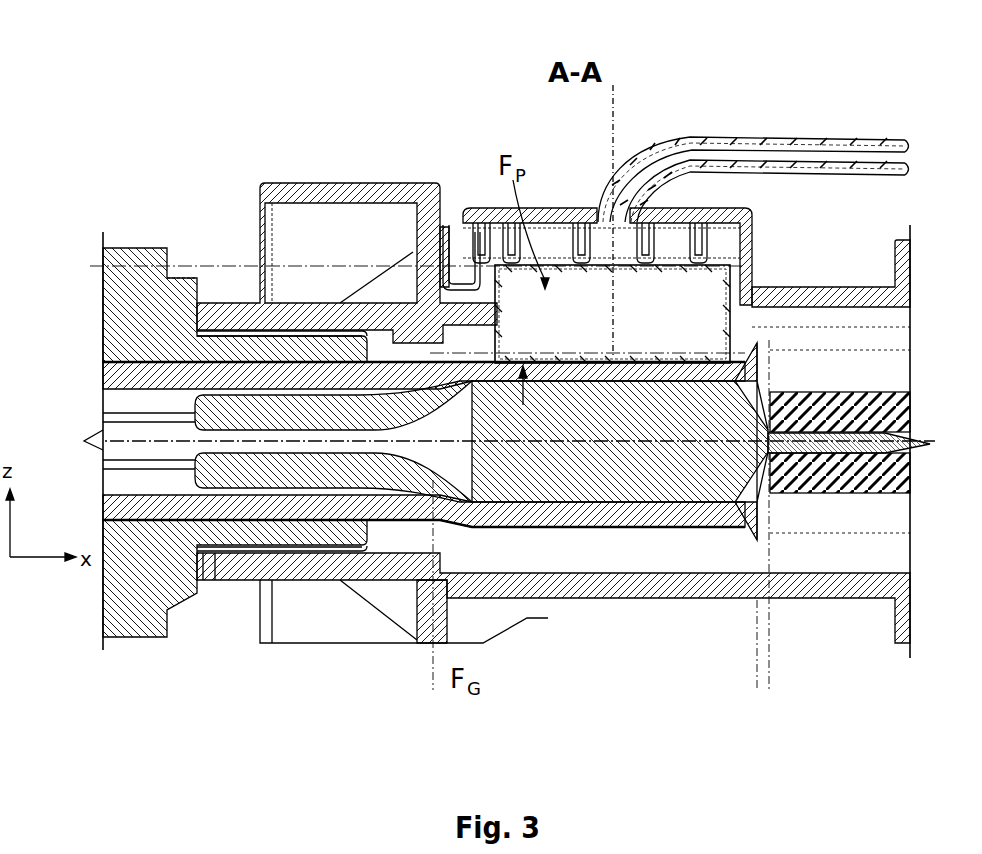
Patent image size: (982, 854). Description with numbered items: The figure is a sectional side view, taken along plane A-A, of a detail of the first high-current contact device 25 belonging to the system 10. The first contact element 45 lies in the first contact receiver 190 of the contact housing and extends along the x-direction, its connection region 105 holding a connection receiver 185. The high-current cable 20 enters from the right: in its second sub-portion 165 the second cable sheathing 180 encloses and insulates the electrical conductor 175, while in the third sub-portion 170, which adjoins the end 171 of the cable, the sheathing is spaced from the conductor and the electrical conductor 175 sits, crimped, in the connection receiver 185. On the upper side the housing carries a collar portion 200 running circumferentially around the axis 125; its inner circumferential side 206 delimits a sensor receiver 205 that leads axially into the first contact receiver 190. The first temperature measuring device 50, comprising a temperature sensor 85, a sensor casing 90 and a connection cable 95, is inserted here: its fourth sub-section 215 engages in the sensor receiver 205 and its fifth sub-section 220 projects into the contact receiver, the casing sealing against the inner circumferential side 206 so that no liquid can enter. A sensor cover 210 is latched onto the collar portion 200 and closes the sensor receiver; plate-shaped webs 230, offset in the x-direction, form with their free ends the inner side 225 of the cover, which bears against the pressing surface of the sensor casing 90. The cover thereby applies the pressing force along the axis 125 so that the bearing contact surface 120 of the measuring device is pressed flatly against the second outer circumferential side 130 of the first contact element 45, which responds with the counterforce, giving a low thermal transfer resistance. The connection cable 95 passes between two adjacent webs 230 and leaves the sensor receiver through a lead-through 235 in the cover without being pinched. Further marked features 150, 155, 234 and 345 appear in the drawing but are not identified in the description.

The system 10 is at (424, 500).
The first high-current contact device 25 is at (417, 652).
The high-current cable 20 is at (808, 522).
The first contact element 45 is at (713, 510).
The first temperature measuring device 50 is at (795, 340).
The temperature sensor 85 is at (572, 223).
The sensor casing 90 is at (487, 247).
The connection cable 95 is at (648, 182).
The connection region 105 is at (758, 685).
The bearing contact surface 120 is at (653, 513).
The axis 125 is at (613, 140).
The second outer circumferential side 130 is at (678, 352).
The line end 150 is at (883, 167).
The gas feed tube 155 is at (740, 218).
The second sub-portion 165 is at (910, 685).
The third sub-portion 170 is at (372, 420).
The end 171 is at (330, 470).
The electrical conductor 175 is at (868, 450).
The second cable sheathing 180 is at (868, 404).
The connection receiver 185 is at (430, 490).
The first contact receiver 190 is at (430, 333).
The collar portion 200 is at (462, 232).
The sensor receiver 205 is at (752, 318).
The inner circumferential side 206 is at (590, 375).
The sensor cover 210 is at (563, 216).
The fourth sub-section 215 is at (103, 363).
The fifth sub-section 220 is at (360, 337).
The inner side 225 is at (703, 380).
The web 230 is at (625, 222).
The seal lip 234 is at (740, 243).
The lead-through 235 is at (650, 205).
The seal groove 345 is at (688, 228).